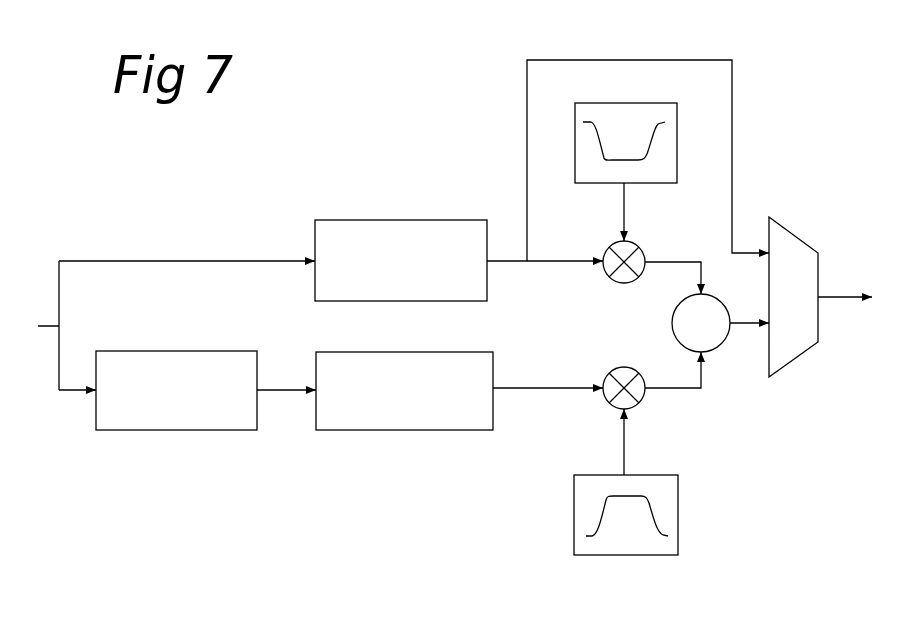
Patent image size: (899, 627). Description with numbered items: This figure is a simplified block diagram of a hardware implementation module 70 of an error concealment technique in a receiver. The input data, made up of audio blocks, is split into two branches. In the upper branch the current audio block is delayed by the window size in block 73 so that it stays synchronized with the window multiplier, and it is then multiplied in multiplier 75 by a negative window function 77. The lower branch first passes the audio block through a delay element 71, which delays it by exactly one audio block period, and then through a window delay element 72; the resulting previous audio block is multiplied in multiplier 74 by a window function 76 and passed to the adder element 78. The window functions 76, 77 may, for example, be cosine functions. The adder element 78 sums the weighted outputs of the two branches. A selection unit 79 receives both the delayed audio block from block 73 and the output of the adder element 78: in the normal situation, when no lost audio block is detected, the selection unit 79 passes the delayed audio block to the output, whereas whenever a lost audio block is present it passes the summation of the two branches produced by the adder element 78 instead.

The hardware implementation module 70 is at (440, 176).
The delay element 71 is at (148, 421).
The window delay element 72 is at (339, 418).
The window size delay block 73 is at (360, 232).
The multiplier 74 is at (622, 372).
The multiplier 75 is at (612, 276).
The window function 76 is at (665, 493).
The negative window function 77 is at (672, 140).
The adder element 78 is at (712, 338).
The selection unit 79 is at (790, 249).